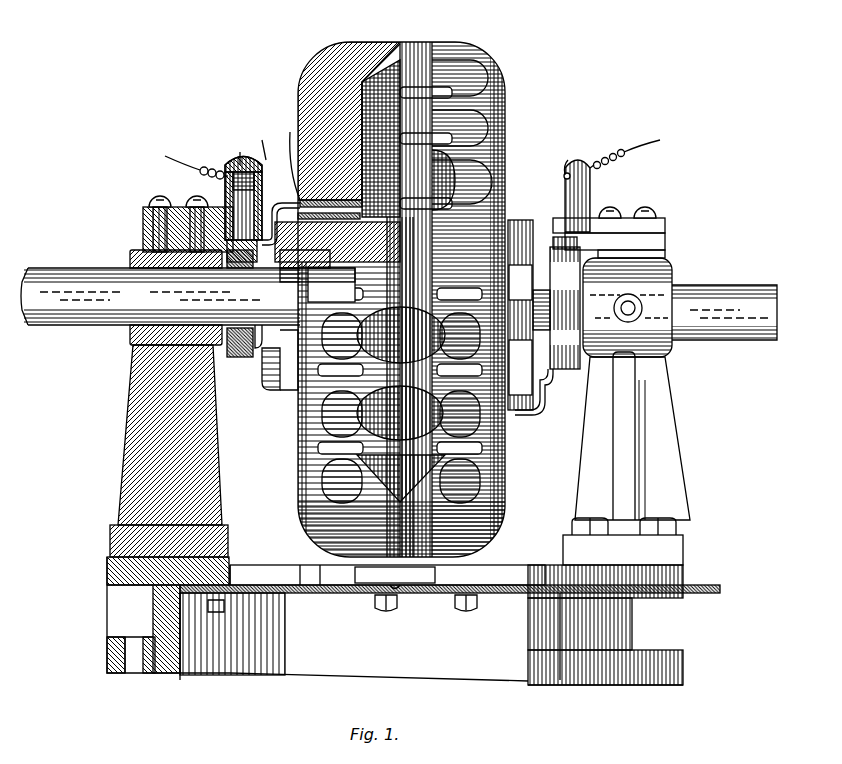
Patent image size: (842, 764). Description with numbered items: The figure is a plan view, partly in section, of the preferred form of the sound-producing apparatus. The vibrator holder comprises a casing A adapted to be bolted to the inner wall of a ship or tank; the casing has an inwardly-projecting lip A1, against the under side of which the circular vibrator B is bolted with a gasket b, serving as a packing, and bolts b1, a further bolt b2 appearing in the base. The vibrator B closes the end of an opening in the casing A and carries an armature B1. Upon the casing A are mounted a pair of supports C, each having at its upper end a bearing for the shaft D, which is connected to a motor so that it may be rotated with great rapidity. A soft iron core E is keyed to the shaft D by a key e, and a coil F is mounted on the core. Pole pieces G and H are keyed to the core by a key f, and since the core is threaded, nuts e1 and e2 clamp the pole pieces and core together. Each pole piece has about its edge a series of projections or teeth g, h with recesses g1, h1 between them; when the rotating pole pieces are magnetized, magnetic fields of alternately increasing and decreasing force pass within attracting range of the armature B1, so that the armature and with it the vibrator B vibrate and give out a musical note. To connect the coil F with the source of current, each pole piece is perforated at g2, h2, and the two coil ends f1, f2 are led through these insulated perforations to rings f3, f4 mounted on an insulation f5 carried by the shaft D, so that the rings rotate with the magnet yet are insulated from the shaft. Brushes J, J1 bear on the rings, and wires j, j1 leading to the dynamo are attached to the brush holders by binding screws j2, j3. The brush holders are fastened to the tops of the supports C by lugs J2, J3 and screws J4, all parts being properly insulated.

The casing A is at (150, 606).
The inwardly-projecting lip A1 is at (240, 566).
The vibrator B is at (286, 594).
The armature B1 is at (440, 572).
The gasket b is at (236, 605).
The bolts b1 is at (380, 608).
The bolt b2 is at (216, 612).
The supports C is at (122, 498).
The shaft D is at (78, 270).
The core E is at (317, 282).
The key e is at (285, 262).
The nut e1 is at (272, 392).
The nut e2 is at (518, 222).
The coil F is at (402, 58).
The key f is at (286, 204).
The coil end f1 is at (264, 140).
The coil end f2 is at (536, 400).
The ring f3 is at (258, 350).
The ring f4 is at (566, 372).
The insulation f5 is at (256, 340).
The pole piece G is at (310, 78).
The projections or teeth g is at (401, 299).
The recesses g1 is at (351, 445).
The perforation g2 is at (291, 157).
The pole piece H is at (506, 128).
The projections or teeth h is at (439, 411).
The recesses h1 is at (454, 445).
The perforation h2 is at (515, 412).
The brush J is at (230, 190).
The brush J1 is at (578, 233).
The lug J2 is at (143, 212).
The lug J3 is at (668, 234).
The screws J4 is at (166, 200).
The wire j is at (162, 162).
The wire j1 is at (629, 147).
The binding screw j2 is at (240, 152).
The binding screw j3 is at (566, 165).